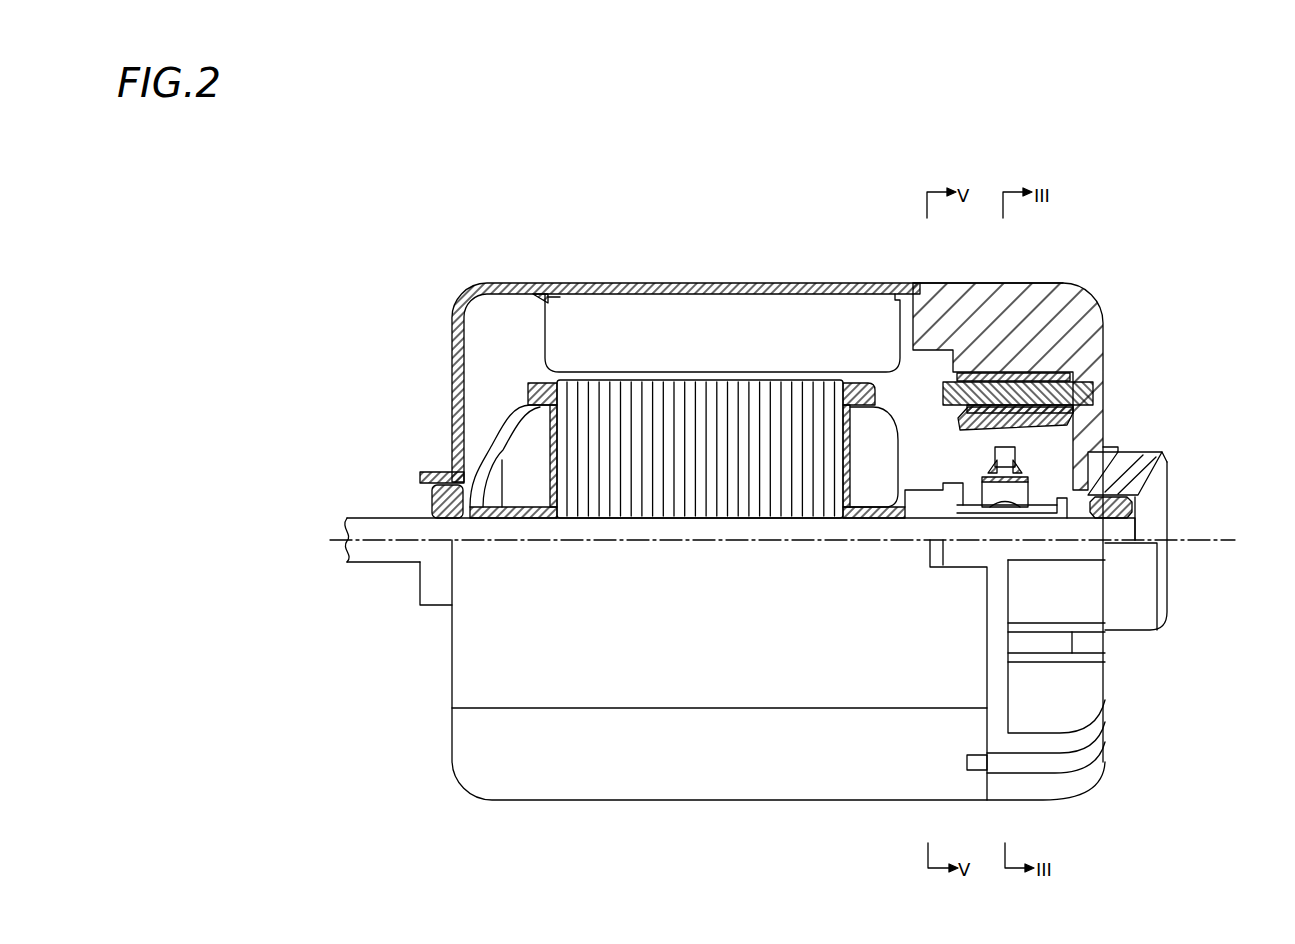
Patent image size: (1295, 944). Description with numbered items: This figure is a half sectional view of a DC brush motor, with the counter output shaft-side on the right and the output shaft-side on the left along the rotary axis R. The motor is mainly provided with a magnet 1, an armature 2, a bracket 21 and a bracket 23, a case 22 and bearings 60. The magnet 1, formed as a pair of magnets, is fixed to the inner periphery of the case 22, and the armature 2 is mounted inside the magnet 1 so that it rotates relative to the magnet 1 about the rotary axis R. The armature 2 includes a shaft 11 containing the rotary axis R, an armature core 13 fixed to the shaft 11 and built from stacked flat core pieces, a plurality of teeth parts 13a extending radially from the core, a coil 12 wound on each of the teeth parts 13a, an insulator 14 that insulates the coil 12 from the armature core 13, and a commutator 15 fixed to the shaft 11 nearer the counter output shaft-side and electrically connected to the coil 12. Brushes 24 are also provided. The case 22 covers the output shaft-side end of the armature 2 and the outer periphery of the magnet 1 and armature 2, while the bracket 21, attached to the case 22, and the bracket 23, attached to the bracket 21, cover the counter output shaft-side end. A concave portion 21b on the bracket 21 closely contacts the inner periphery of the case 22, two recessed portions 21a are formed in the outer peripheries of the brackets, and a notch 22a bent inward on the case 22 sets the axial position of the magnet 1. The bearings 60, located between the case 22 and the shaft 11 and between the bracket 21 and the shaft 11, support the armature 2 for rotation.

The magnet 1 is at (681, 320).
The armature 2 is at (497, 397).
The shaft 11 is at (1122, 538).
The coil 12 is at (888, 420).
The armature core 13 is at (808, 405).
The teeth parts 13a is at (774, 374).
The insulator 14 is at (853, 383).
The commutator 15 is at (1163, 455).
The bracket 21 is at (1082, 320).
The recessed portions 21a is at (1044, 642).
The concave portion 21b is at (975, 283).
The case 22 is at (645, 290).
The notch 22a is at (543, 296).
The bracket 23 is at (1075, 575).
The brushes 24 is at (1010, 457).
The bearings 60 is at (432, 500).
The rotary axis R is at (1228, 540).